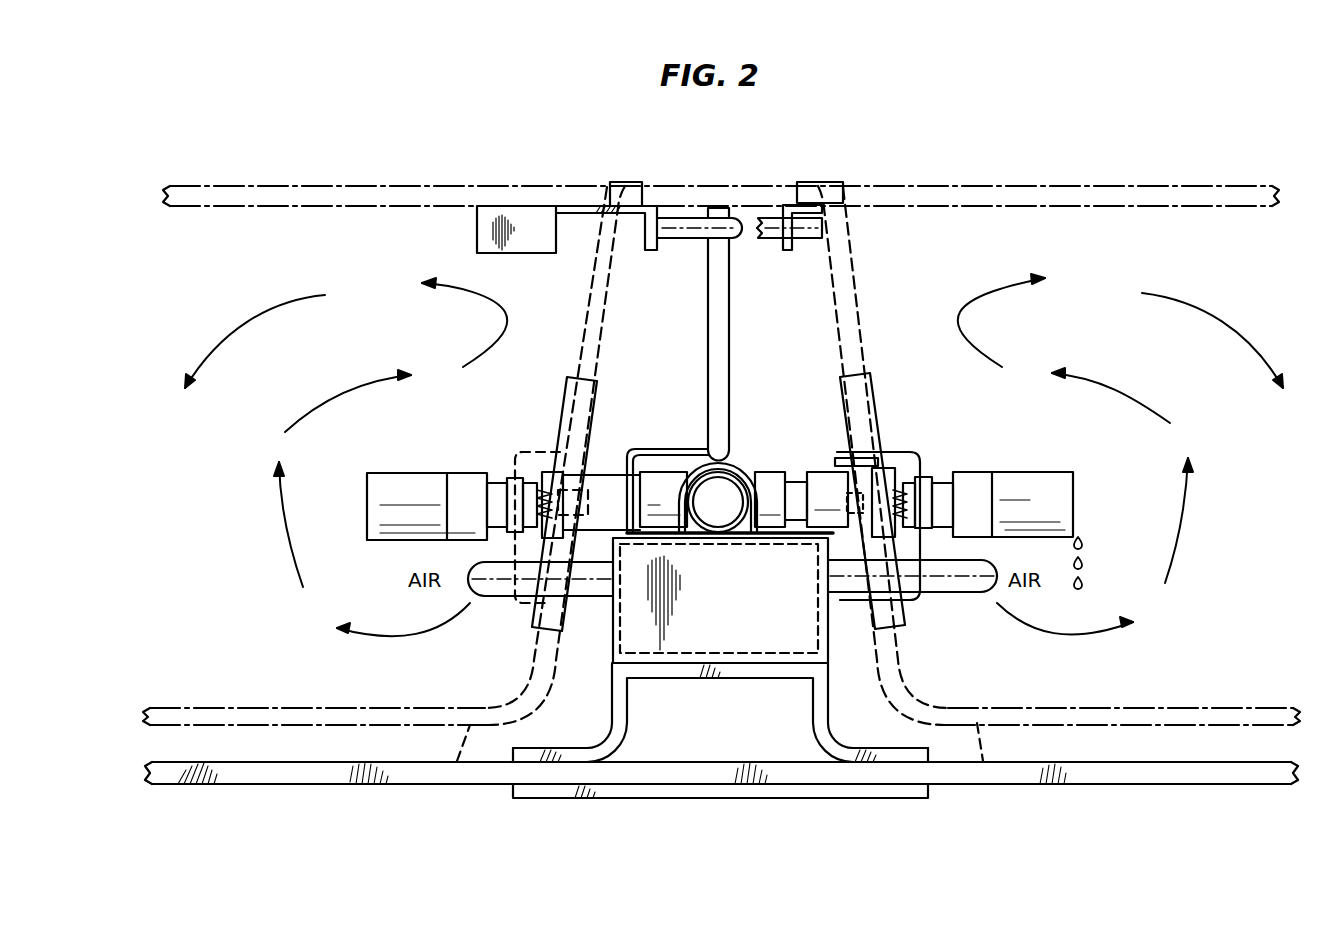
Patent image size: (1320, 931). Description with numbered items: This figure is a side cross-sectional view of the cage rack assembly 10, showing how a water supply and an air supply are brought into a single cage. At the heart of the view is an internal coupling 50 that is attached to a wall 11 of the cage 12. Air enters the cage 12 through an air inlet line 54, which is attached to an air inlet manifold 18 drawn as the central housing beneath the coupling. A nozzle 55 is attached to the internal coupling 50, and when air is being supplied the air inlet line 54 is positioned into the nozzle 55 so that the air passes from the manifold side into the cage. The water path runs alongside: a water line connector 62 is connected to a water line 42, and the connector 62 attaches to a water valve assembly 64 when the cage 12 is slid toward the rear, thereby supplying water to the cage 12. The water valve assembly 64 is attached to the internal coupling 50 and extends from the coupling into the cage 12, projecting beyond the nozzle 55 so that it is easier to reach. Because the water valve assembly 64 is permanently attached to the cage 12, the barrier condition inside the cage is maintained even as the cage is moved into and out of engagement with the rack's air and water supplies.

The cage rack assembly 10 is at (411, 141).
The wall 11 is at (848, 268).
The cage 12 is at (797, 192).
The air inlet manifold 18 is at (731, 600).
The water line 42 is at (688, 477).
The internal coupling 50 is at (900, 450).
The air inlet line 54 is at (842, 588).
The nozzle 55 is at (970, 593).
The water line connector 62 is at (848, 503).
The water valve assembly 64 is at (1042, 470).